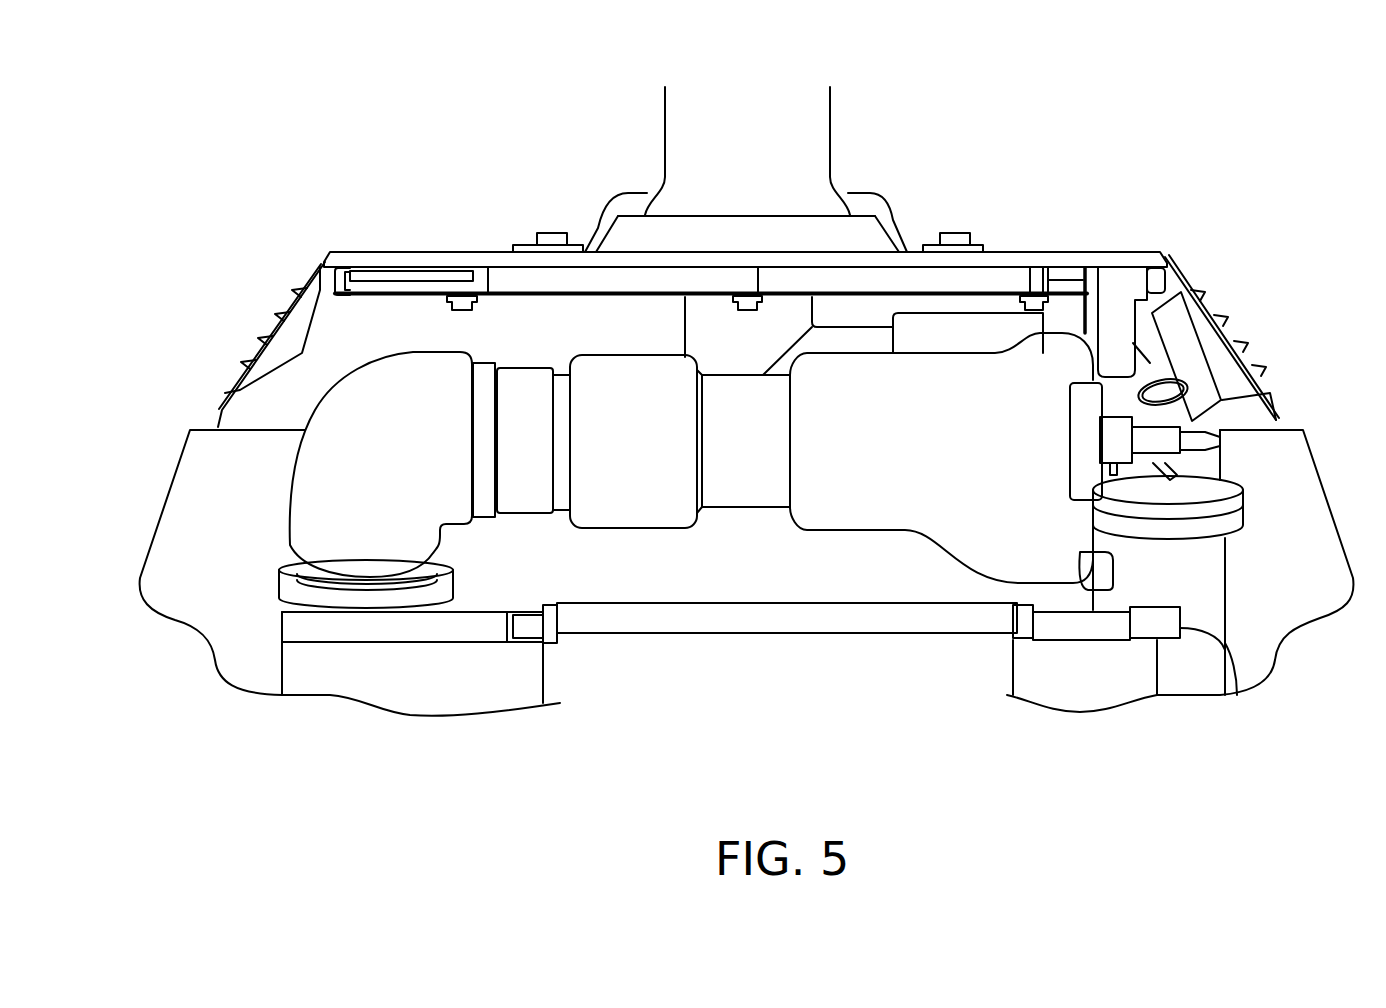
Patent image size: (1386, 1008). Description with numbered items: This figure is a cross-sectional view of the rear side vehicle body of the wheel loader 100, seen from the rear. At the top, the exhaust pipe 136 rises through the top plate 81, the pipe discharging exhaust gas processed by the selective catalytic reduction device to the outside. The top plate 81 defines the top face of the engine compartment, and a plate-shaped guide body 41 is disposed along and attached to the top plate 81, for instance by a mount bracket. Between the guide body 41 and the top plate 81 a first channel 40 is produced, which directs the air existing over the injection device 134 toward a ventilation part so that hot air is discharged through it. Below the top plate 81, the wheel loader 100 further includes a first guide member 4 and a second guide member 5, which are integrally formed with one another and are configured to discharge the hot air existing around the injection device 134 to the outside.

The wheel loader 100 is at (1181, 175).
The exhaust pipe 136 is at (793, 121).
The top plate 81 is at (432, 252).
The first channel 40 is at (550, 280).
The guide body 41 is at (622, 297).
The first guide member 4 is at (362, 300).
The second guide member 5 is at (1143, 338).
The injection device 134 is at (1157, 443).